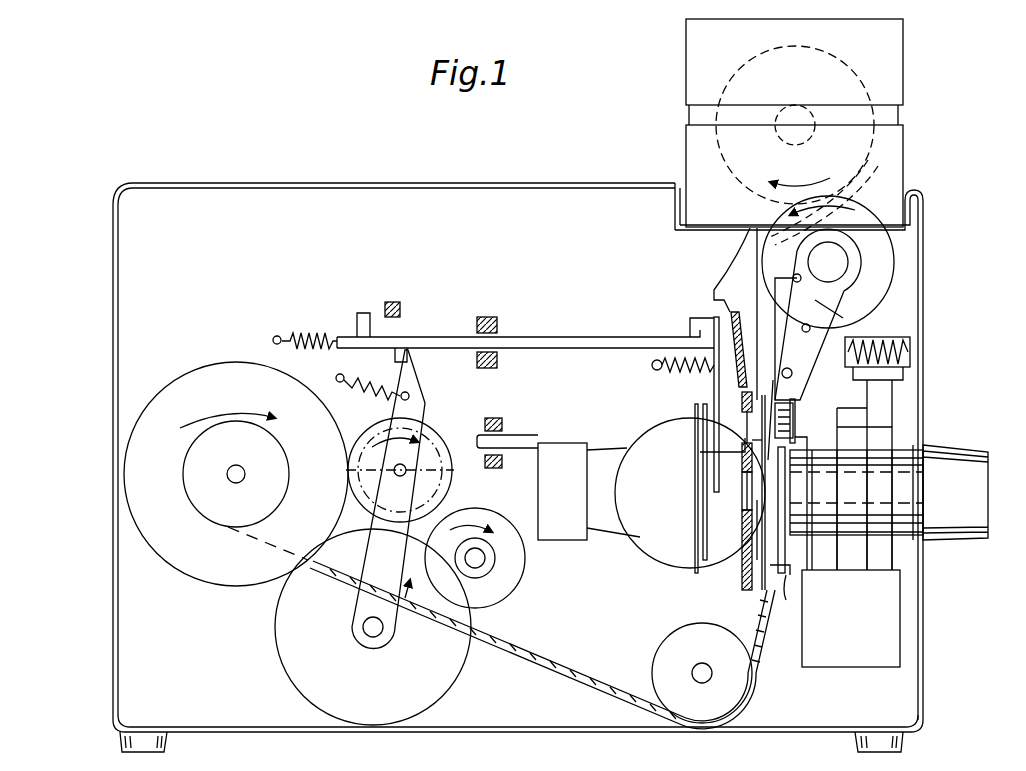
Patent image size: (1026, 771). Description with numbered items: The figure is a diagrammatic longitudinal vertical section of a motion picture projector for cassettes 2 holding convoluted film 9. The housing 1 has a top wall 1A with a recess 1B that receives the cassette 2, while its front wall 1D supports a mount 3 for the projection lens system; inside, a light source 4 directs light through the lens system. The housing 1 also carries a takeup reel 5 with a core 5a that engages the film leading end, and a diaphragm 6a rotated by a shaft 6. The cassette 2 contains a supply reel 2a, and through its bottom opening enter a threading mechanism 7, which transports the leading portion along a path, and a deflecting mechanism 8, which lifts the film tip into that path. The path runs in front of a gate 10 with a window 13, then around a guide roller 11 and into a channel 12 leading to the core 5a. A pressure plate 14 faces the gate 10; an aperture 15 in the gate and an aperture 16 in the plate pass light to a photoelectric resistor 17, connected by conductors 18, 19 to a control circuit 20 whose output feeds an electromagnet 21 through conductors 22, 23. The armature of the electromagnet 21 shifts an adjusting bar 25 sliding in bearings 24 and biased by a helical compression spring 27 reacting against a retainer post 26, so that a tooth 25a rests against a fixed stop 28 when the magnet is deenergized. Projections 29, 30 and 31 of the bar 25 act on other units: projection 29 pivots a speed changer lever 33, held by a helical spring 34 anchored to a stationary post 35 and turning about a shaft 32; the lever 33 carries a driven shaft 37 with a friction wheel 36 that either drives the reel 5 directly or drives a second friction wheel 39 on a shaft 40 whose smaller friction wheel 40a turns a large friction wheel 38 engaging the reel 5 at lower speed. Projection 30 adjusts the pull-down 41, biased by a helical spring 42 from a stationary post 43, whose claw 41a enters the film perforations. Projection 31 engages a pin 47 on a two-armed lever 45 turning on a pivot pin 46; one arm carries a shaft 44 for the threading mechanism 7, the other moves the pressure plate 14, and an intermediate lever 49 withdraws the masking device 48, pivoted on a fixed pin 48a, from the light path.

The housing 1 is at (543, 438).
The top wall 1A is at (352, 197).
The recess 1B is at (680, 198).
The front wall 1D is at (925, 602).
The cassette 2 is at (820, 123).
The supply reel 2a is at (880, 96).
The mount 3 is at (972, 476).
The light source 4 is at (645, 530).
The takeup reel 5 is at (236, 480).
The core 5a is at (280, 452).
The shaft 6 is at (527, 440).
The diaphragm 6a is at (706, 550).
The threading mechanism 7 is at (880, 276).
The deflecting mechanism 8 is at (732, 272).
The motion picture film 9 is at (876, 158).
The gate 10 is at (760, 570).
The guide roller 11 is at (666, 656).
The channel 12 is at (758, 692).
The window 13 is at (752, 500).
The pressure plate 14 is at (760, 520).
The aperture 15 is at (698, 430).
The aperture 16 is at (745, 482).
The photoelectric resistor 17 is at (795, 404).
The conductor 18 is at (860, 404).
The conductor 19 is at (845, 427).
The control circuit 20 is at (885, 638).
The electromagnet 21 is at (912, 351).
The conductor 22 is at (880, 384).
The conductor 23 is at (895, 440).
The bearings 24 is at (487, 316).
The adjusting bar 25 is at (516, 301).
The tooth 25a is at (360, 312).
The retainer post 26 is at (272, 336).
The helical compression spring 27 is at (303, 332).
The fixed stop 28 is at (390, 300).
The motion transmitting projection 29 is at (400, 356).
The motion transmitting projection 30 is at (695, 320).
The motion transmitting projection 31 is at (735, 308).
The shaft 32 is at (368, 636).
The speed changer lever 33 is at (417, 379).
The helical spring 34 is at (372, 396).
The stationary post 35 is at (335, 378).
The friction wheel 36 is at (430, 436).
The driven shaft 37 is at (460, 462).
The large friction wheel 38 is at (455, 672).
The second friction wheel 39 is at (522, 565).
The shaft 40 is at (478, 565).
The smaller friction wheel 40a is at (493, 565).
The pull-down 41 is at (712, 390).
The claw 41a is at (742, 447).
The helical spring 42 is at (680, 358).
The stationary post 43 is at (651, 365).
The shaft 44 is at (840, 262).
The two-armed lever 45 is at (855, 300).
The pivot pin 46 is at (793, 374).
The pin 47 is at (852, 322).
The masking device 48 is at (781, 518).
The fixed pin 48a is at (792, 596).
The intermediate lever 49 is at (773, 535).